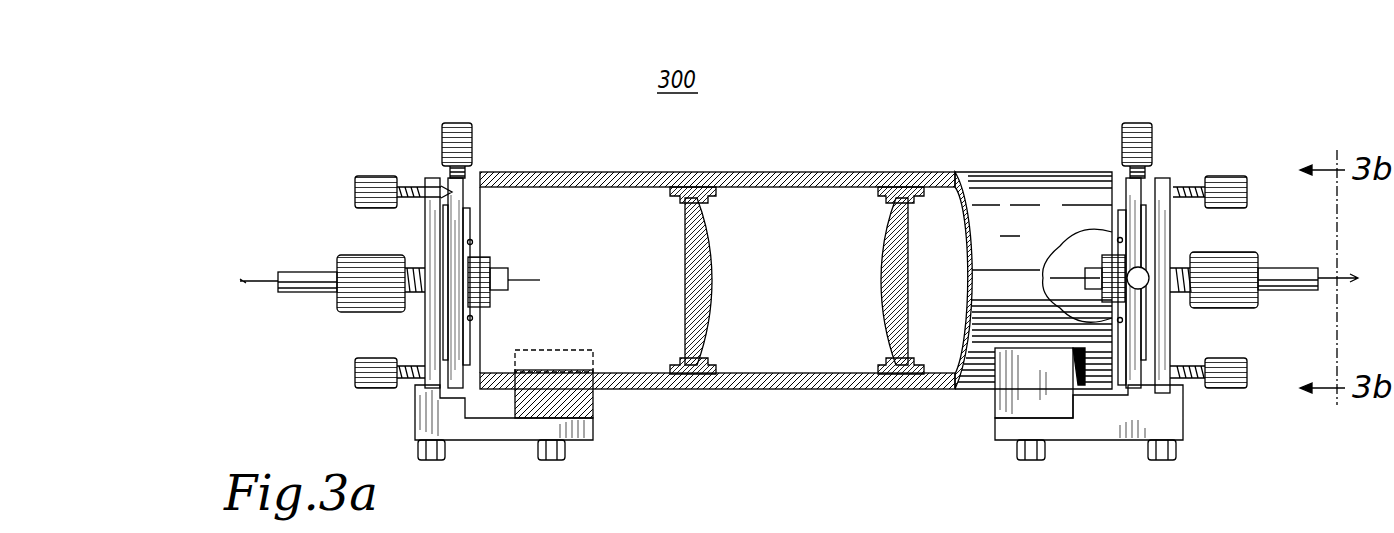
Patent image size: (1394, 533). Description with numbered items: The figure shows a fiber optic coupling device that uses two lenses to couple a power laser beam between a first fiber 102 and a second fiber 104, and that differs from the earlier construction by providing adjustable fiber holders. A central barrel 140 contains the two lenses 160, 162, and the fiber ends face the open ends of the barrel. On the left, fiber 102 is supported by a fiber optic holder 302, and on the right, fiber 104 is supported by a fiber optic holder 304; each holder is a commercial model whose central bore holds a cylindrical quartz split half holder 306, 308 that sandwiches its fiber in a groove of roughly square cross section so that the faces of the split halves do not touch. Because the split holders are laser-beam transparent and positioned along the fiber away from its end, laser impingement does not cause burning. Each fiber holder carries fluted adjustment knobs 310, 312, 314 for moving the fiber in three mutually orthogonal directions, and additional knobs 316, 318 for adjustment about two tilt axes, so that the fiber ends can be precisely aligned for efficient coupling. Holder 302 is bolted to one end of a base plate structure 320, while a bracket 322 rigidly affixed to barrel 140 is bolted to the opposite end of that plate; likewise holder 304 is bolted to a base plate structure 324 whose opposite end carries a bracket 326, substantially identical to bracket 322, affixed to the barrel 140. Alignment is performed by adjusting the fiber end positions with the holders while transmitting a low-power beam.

The fiber 102 is at (254, 270).
The fiber 104 is at (1353, 255).
The barrel 140 is at (800, 170).
The lens 160 is at (712, 256).
The lens 162 is at (880, 296).
The fiber optic holder 302 is at (403, 172).
The fiber optic holder 304 is at (1186, 168).
The split half holder 306 is at (313, 268).
The split half holder 308 is at (1070, 234).
The fluted adjustment knob 310 is at (1152, 290).
The fluted adjustment knob 312 is at (442, 122).
The fluted adjustment knob 314 is at (360, 312).
The adjustment knob 316 is at (370, 174).
The adjustment knob 318 is at (374, 388).
The base plate structure 320 is at (532, 440).
The bracket 322 is at (596, 404).
The base plate structure 324 is at (1122, 440).
The bracket 326 is at (995, 408).